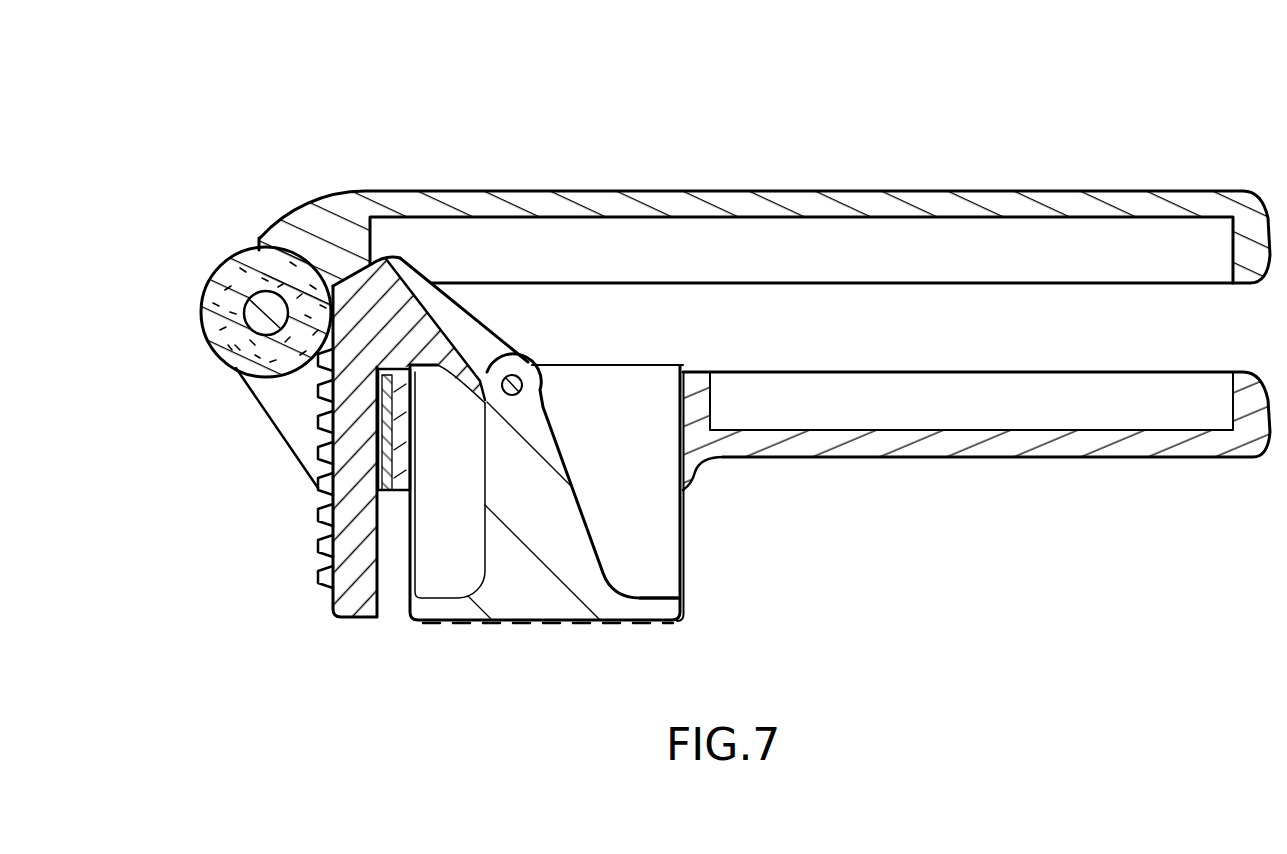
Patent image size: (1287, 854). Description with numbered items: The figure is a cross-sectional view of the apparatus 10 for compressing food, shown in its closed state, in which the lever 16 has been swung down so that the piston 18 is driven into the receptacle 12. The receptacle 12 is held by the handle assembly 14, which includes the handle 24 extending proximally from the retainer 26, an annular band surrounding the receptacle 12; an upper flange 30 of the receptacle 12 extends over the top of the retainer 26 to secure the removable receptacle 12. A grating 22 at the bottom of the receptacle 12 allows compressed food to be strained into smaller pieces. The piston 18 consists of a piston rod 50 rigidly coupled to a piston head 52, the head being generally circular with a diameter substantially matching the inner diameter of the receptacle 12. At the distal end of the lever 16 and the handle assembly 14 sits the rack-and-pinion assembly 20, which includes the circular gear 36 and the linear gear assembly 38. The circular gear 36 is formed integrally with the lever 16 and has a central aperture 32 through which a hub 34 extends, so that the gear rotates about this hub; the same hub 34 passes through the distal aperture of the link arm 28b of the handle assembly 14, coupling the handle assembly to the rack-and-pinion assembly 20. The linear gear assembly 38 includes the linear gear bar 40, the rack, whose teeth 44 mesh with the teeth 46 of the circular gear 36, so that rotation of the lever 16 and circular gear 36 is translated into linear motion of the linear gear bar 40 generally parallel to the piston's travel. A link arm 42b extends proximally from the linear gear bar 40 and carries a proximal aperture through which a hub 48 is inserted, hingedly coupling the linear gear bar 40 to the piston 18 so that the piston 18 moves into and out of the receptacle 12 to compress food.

The apparatus 10 is at (683, 365).
The receptacle 12 is at (644, 482).
The handle assembly 14 is at (976, 466).
The lever 16 is at (876, 199).
The piston 18 is at (544, 508).
The rack-and-pinion assembly 20 is at (214, 299).
The grating 22 is at (548, 625).
The handle 24 is at (1052, 455).
The retainer 26 is at (402, 428).
The link arm 28b is at (280, 418).
The upper flange 30 is at (690, 364).
The central aperture 32 is at (226, 312).
The hub 34 is at (262, 320).
The circular gear 36 is at (236, 368).
The linear gear assembly 38 is at (423, 248).
The linear gear bar 40 is at (340, 600).
The link arm 42b is at (477, 332).
The teeth 44 is at (325, 513).
The teeth 46 is at (236, 246).
The hub 48 is at (524, 385).
The piston rod 50 is at (500, 475).
The piston head 52 is at (670, 603).